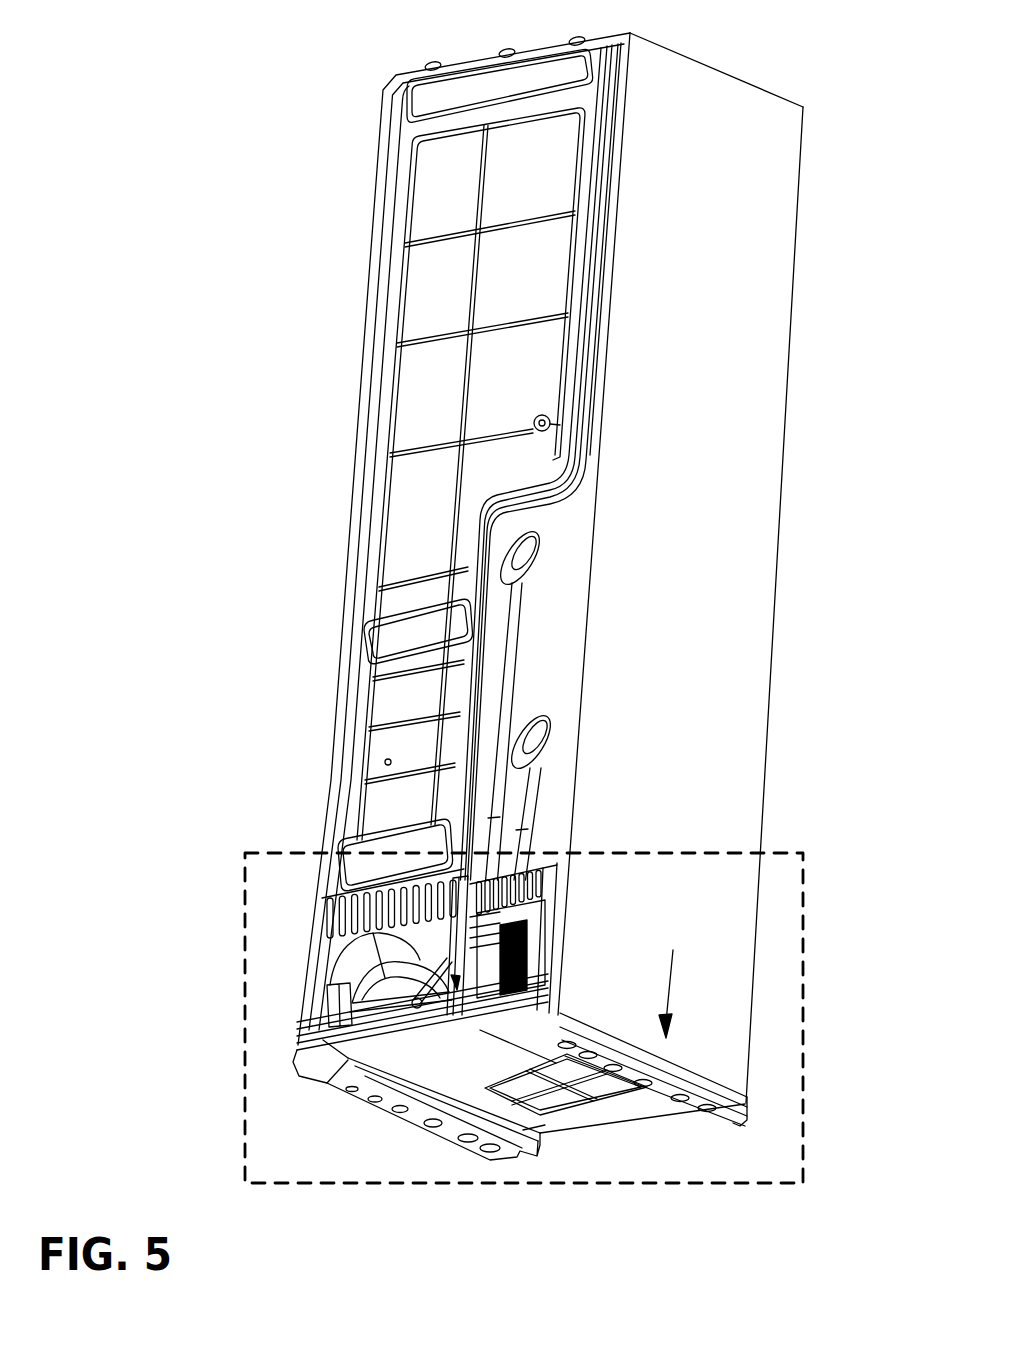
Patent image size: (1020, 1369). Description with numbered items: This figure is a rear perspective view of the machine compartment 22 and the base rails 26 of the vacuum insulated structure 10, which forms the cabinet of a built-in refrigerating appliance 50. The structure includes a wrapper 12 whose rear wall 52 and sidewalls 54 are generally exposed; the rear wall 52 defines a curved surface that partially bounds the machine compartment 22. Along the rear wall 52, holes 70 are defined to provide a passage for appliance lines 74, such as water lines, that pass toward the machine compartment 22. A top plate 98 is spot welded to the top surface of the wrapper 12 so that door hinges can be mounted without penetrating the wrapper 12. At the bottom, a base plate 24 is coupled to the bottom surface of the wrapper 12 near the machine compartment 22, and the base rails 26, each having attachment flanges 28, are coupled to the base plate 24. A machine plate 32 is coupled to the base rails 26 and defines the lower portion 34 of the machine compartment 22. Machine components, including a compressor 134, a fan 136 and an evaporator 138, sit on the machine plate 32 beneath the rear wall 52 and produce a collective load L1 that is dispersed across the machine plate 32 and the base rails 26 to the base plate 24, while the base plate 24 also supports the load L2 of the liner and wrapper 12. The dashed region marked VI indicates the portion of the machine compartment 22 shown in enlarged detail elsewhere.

The vacuum insulated structure 10 is at (420, 58).
The wrapper 12 is at (777, 90).
The machine compartment 22 is at (348, 972).
The base plate 24 is at (571, 1110).
The base rails 26 is at (360, 1090).
The attachment flanges 28 is at (453, 1095).
The machine plate 32 is at (332, 1076).
The lower portion 34 is at (300, 1022).
The refrigerating appliance 50 is at (258, 124).
The rear wall 52 is at (400, 242).
The sidewalls 54 is at (730, 647).
The holes 70 is at (508, 542).
The appliance lines 74 is at (515, 617).
The top plate 98 is at (475, 62).
The compressor 134 is at (352, 968).
The fan 136 is at (327, 912).
The evaporator 138 is at (535, 964).
The load L1 is at (556, 938).
The load L2 is at (673, 973).
The detail view VI is at (244, 885).